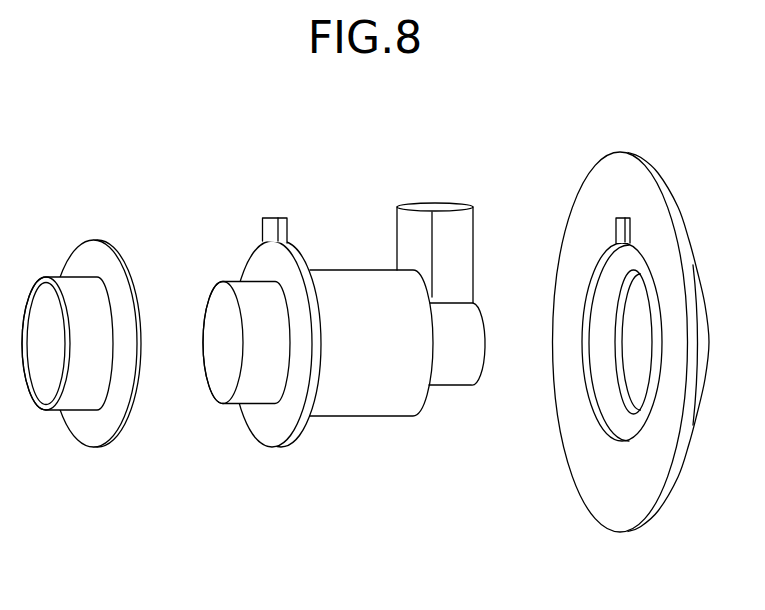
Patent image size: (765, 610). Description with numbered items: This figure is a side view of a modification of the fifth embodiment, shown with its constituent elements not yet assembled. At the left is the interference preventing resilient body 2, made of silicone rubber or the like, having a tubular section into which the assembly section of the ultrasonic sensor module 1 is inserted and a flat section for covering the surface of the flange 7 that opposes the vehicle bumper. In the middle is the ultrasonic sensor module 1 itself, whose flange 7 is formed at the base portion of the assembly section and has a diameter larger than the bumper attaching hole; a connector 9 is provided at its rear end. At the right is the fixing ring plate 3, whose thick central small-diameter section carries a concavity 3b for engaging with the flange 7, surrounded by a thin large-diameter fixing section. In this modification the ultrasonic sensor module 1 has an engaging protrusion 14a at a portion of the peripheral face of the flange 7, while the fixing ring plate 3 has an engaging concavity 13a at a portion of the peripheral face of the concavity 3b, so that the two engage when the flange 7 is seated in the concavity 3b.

The ultrasonic sensor module 1 is at (367, 393).
The interference preventing resilient body 2 is at (93, 252).
The fixing ring plate 3 is at (617, 511).
The concavity 3b is at (597, 417).
The flange 7 is at (268, 428).
The connector 9 is at (436, 204).
The engaging concavity 13a is at (618, 228).
The engaging protrusion 14a is at (272, 227).